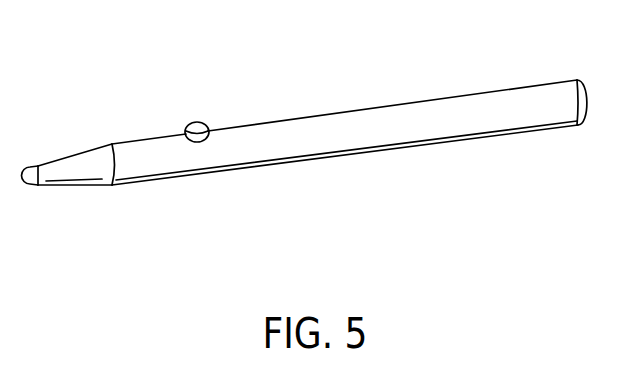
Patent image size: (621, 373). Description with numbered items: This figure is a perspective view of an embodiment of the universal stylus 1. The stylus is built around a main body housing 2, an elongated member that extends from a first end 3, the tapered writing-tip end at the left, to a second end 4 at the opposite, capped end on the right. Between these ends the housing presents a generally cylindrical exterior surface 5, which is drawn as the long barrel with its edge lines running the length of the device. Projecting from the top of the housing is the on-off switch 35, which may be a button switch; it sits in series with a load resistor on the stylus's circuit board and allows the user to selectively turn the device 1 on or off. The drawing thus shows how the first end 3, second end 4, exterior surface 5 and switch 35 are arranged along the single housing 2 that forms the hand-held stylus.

The universal stylus 1 is at (542, 122).
The main body housing 2 is at (282, 156).
The first end 3 is at (48, 163).
The second end 4 is at (574, 80).
The generally cylindrical exterior surface 5 is at (443, 134).
The on-off switch 35 is at (199, 122).